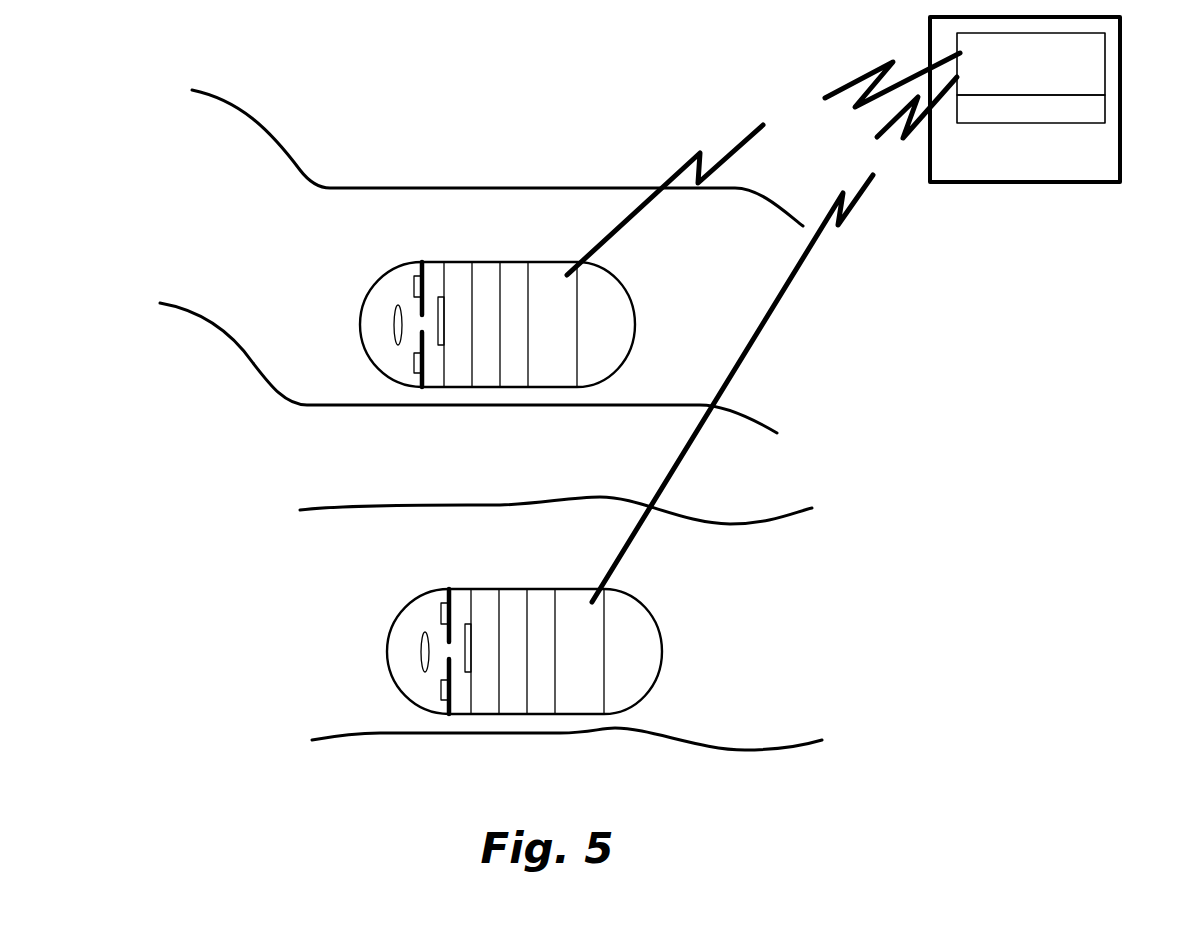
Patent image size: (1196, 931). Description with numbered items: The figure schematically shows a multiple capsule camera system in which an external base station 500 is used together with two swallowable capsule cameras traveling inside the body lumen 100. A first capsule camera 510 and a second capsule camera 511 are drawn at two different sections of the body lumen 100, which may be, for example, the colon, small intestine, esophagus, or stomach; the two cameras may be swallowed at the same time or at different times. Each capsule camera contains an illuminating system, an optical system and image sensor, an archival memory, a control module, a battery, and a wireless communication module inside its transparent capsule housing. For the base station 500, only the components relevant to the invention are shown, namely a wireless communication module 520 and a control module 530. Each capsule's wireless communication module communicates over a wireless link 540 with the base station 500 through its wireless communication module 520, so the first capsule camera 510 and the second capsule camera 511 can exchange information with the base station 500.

The body lumen 100 is at (257, 365).
The second capsule camera 511 is at (519, 306).
The first capsule camera 510 is at (549, 633).
The wireless link 540 is at (692, 153).
The base station 500 is at (1063, 133).
The wireless communication module 520 is at (1088, 82).
The control module 530 is at (1088, 111).